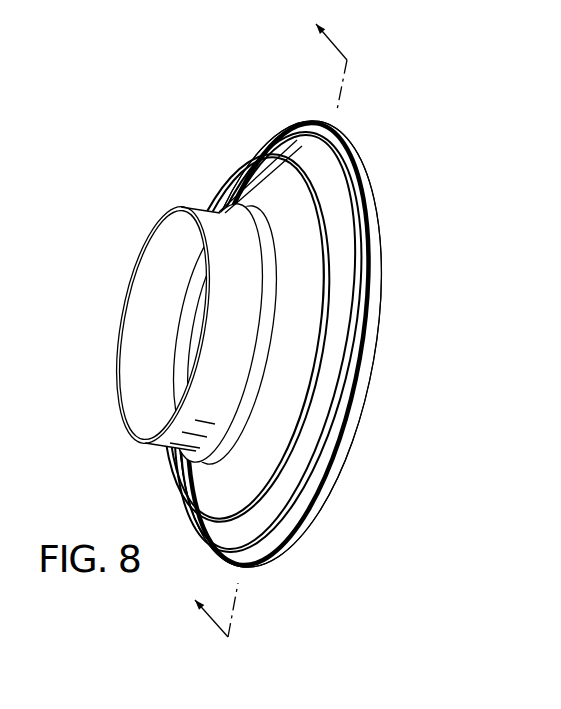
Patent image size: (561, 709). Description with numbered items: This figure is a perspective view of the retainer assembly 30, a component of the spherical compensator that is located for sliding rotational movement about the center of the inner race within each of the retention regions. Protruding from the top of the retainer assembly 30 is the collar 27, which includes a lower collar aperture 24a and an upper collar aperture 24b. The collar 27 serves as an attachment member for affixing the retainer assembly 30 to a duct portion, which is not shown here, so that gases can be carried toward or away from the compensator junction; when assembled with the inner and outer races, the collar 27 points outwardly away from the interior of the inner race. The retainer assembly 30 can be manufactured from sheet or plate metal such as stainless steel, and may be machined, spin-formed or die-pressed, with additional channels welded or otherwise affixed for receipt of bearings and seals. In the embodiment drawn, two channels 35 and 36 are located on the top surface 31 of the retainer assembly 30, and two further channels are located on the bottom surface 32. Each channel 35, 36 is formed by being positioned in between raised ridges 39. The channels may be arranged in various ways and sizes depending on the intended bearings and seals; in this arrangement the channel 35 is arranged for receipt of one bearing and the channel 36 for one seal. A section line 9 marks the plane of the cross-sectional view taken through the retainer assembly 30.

The section line 9- 9 is at (262, 321).
The lower collar aperture 24a is at (202, 333).
The upper collar aperture 24b is at (133, 432).
The collar 27 is at (222, 237).
The retainer assembly 30 is at (362, 130).
The top surface 31 is at (302, 277).
The bottom surface 32 is at (372, 380).
The channel 35 is at (297, 148).
The channel 36 is at (318, 122).
The raised ridges 39 is at (290, 450).